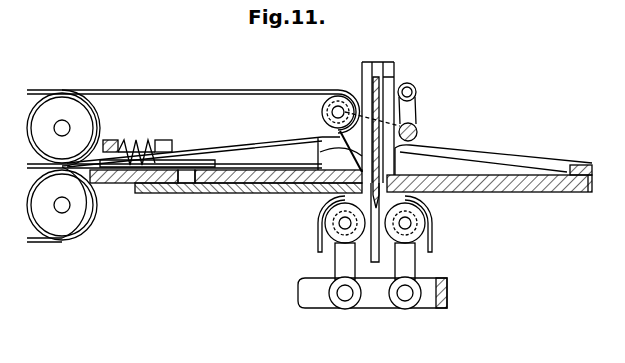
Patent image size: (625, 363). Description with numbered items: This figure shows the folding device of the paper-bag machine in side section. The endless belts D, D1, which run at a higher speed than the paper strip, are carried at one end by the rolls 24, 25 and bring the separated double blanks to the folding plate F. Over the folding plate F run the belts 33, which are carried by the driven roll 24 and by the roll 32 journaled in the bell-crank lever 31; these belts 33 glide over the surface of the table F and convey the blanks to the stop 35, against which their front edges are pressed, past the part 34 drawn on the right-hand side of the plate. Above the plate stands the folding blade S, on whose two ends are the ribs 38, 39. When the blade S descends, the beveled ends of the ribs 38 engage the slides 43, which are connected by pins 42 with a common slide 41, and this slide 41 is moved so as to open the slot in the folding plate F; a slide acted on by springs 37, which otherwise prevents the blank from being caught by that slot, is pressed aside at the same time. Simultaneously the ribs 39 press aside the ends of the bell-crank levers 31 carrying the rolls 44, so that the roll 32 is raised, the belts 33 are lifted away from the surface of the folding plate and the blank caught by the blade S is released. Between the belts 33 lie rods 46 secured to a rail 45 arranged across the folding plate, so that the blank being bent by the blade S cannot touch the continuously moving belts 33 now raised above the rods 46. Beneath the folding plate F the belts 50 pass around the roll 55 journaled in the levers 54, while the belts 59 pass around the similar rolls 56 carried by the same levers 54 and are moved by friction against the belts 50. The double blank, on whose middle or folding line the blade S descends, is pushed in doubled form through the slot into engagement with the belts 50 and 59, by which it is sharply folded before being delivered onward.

The roll 24 is at (72, 110).
The roll 25 is at (74, 227).
The bell-crank lever 31 is at (418, 127).
The roll 32 is at (322, 112).
The belts 33 is at (205, 90).
The guide plate 34 is at (497, 155).
The stop 35 is at (577, 165).
The springs 37 is at (136, 142).
The ribs 38 is at (366, 62).
The ribs 39 is at (389, 62).
The common slide 41 is at (252, 194).
The pins 42 is at (200, 194).
The slides 43 is at (300, 141).
The rolls 44 is at (416, 90).
The rail 45 is at (111, 140).
The rods 46 is at (207, 160).
The belts 50 is at (433, 243).
The levers 54 is at (337, 264).
The roll 55 is at (428, 214).
The rolls 56 is at (330, 216).
The belts 59 is at (318, 242).
The endless belt D is at (42, 90).
The endless belt D1 is at (44, 244).
The folding plate F is at (110, 186).
The folding blade S is at (362, 86).